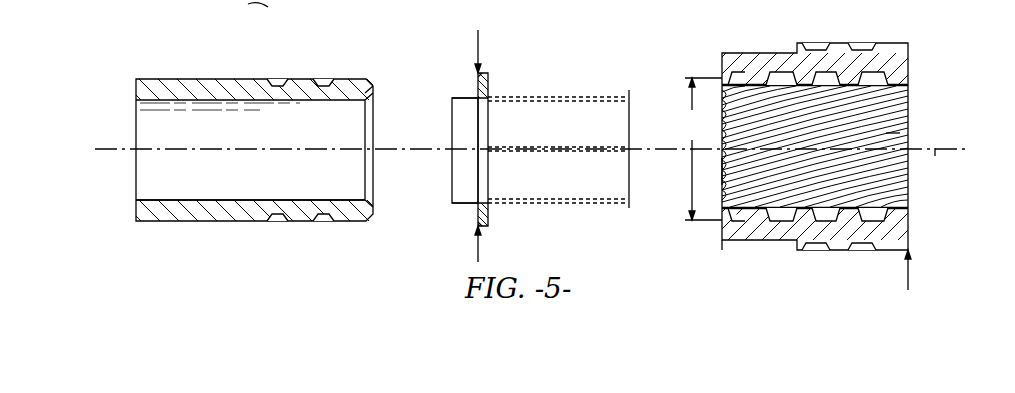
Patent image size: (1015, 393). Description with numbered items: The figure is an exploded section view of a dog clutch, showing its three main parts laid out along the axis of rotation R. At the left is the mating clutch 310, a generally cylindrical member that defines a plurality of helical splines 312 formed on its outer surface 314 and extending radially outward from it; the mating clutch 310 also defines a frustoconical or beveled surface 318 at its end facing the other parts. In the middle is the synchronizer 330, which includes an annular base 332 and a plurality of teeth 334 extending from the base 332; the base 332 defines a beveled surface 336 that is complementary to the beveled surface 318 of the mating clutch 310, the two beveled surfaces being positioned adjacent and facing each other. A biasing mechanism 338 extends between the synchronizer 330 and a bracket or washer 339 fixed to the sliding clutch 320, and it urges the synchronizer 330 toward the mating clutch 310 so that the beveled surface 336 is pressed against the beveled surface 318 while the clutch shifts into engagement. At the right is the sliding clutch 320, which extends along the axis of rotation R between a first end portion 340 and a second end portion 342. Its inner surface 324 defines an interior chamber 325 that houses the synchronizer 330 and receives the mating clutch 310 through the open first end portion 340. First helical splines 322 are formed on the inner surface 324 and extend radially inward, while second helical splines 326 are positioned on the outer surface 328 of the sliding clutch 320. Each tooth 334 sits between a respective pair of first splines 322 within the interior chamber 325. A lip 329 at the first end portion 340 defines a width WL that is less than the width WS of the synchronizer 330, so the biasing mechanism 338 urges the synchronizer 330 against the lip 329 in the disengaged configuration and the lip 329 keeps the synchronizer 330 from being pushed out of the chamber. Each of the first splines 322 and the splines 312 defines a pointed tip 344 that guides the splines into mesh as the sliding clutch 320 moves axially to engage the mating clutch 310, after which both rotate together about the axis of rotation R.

The mating clutch 310 is at (215, 80).
The helical splines 312 is at (325, 90).
The outer surface 314 is at (225, 230).
The beveled surface 318 is at (378, 99).
The sliding clutch 320 is at (908, 178).
The first helical splines 322 is at (880, 100).
The inner surface 324 is at (768, 212).
The interior chamber 325 is at (900, 130).
The second helical splines 326 is at (878, 48).
The outer surface 328 is at (770, 52).
The lip 329 is at (726, 78).
The synchronizer 330 is at (476, 178).
The base 332 is at (456, 210).
The teeth 334 is at (486, 75).
The beveled surface 336 is at (453, 97).
The biasing mechanism 338 is at (560, 95).
The washer 339 is at (627, 100).
The first end portion 340 is at (721, 251).
The second end portion 342 is at (910, 277).
The pointed tips 344 is at (714, 159).
The width of synchronizer WS is at (479, 42).
The width of lip WL is at (701, 149).
The axis of rotation R is at (935, 156).